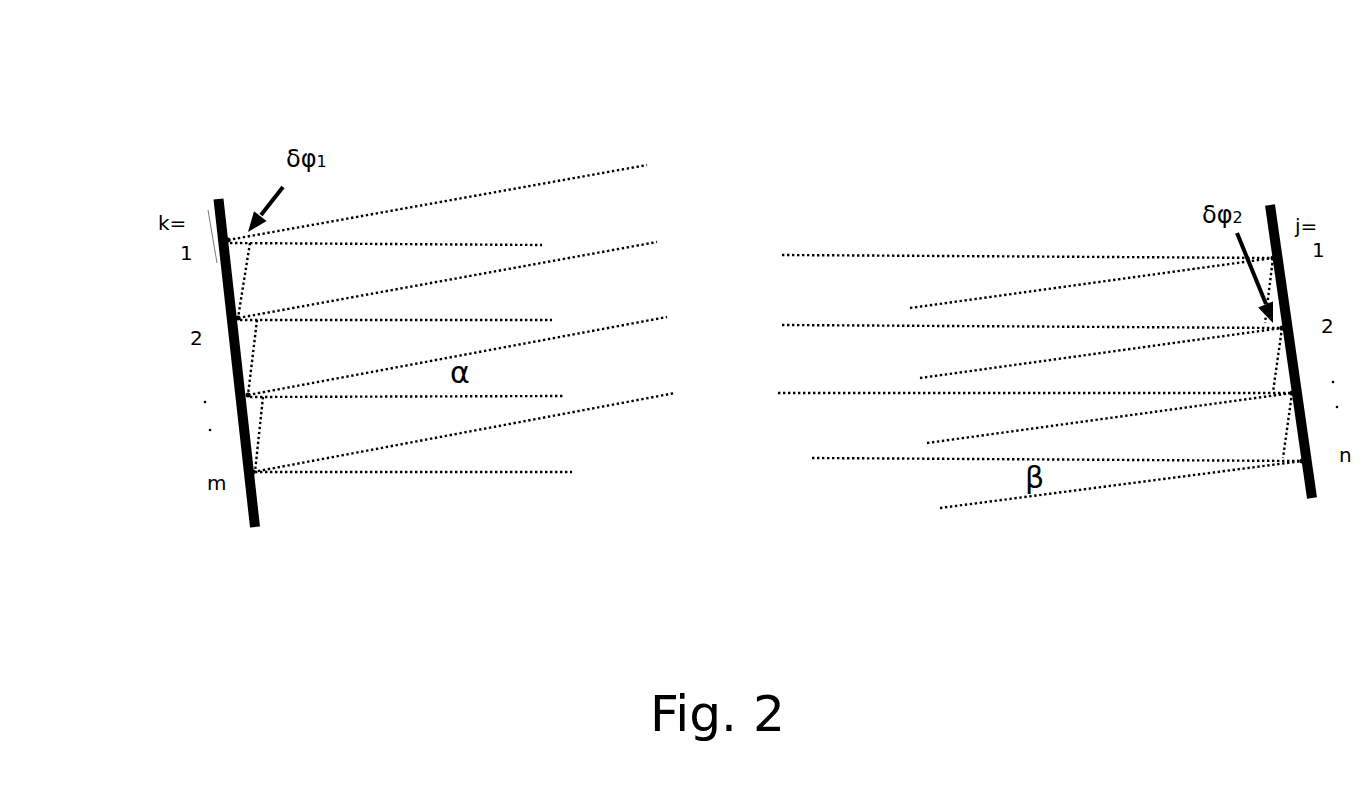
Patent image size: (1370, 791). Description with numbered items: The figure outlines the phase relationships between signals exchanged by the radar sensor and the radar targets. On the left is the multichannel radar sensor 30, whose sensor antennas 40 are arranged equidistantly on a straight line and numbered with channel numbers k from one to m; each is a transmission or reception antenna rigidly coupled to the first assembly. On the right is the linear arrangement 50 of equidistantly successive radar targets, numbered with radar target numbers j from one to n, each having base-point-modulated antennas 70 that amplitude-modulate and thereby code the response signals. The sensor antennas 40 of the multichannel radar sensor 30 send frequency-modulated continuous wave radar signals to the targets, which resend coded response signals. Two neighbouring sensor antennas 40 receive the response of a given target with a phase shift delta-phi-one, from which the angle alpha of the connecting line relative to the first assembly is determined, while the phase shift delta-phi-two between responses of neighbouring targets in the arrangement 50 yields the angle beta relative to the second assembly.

The multichannel radar sensor 30 is at (256, 528).
The sensor antennas 40 is at (228, 240).
The linear arrangement of radar targets 50 is at (1310, 478).
The base-point-modulated antennas 70 is at (1305, 462).